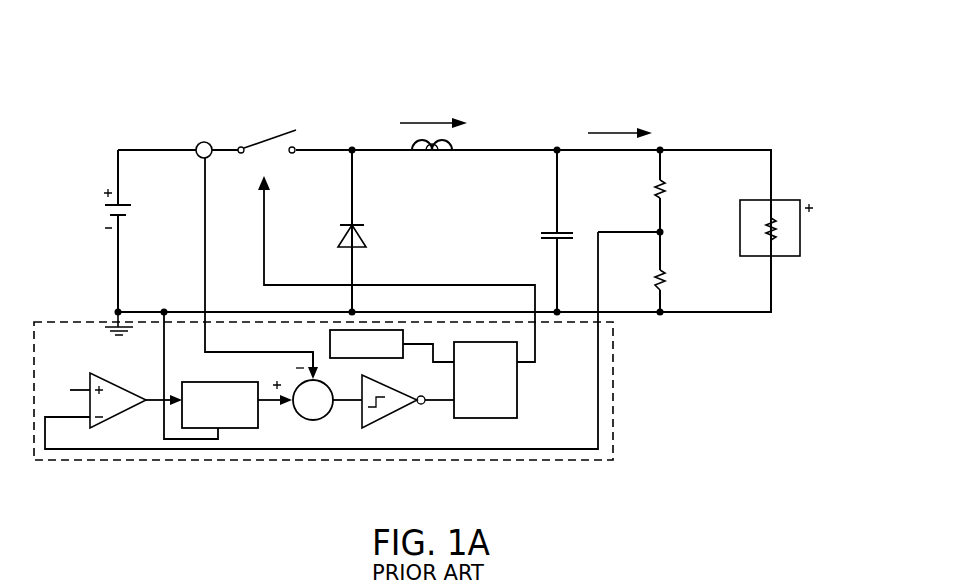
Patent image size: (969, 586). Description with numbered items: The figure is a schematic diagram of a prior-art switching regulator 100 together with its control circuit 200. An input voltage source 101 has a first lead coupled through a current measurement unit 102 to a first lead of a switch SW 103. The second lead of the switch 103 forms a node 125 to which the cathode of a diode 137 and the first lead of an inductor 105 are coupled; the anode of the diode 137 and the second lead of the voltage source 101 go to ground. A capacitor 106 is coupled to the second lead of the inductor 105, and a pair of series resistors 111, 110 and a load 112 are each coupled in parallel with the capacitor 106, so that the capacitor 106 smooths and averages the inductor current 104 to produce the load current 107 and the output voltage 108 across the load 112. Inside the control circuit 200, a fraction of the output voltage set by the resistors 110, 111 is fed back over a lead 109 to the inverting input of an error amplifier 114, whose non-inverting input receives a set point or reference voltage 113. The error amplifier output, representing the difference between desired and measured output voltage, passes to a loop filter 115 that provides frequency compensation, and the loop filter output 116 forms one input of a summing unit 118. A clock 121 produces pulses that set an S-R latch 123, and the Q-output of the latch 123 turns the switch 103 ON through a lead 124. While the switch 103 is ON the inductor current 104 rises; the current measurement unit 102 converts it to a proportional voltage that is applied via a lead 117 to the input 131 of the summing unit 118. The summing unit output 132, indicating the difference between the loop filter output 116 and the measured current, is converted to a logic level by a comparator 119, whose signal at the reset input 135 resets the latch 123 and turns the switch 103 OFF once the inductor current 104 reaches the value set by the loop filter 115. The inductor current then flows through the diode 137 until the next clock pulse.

The buck DC-DC converter (prior art) 100 is at (618, 48).
The input voltage source 101 is at (73, 192).
The current measurement unit 102 is at (202, 142).
The switch SW 103 is at (266, 112).
The inductor current IL 104 is at (437, 103).
The inductor 105 is at (434, 182).
The capacitor 106 is at (535, 221).
The load current ILOAD 107 is at (642, 117).
The output voltage 108 is at (820, 187).
The lead 109 is at (598, 383).
The resistor R2 110 is at (695, 286).
The resistor R1 111 is at (695, 181).
The load 112 is at (772, 240).
The reference voltage 113 is at (77, 388).
The error amplifier 114 is at (97, 428).
The loop filter 115 is at (190, 382).
The loop filter output 116 is at (262, 402).
The lead 117 is at (200, 262).
The summing unit 118 is at (308, 420).
The comparator 119 is at (380, 421).
The clock generator 121 is at (330, 346).
The latch 123 is at (517, 402).
The lead 124 is at (267, 213).
The switch node Lx 125 is at (325, 147).
The summing unit input 131 is at (327, 381).
The summing unit output 132 is at (345, 402).
The latch reset input 135 is at (435, 403).
The diode 137 is at (379, 227).
The control circuit 200 is at (614, 448).